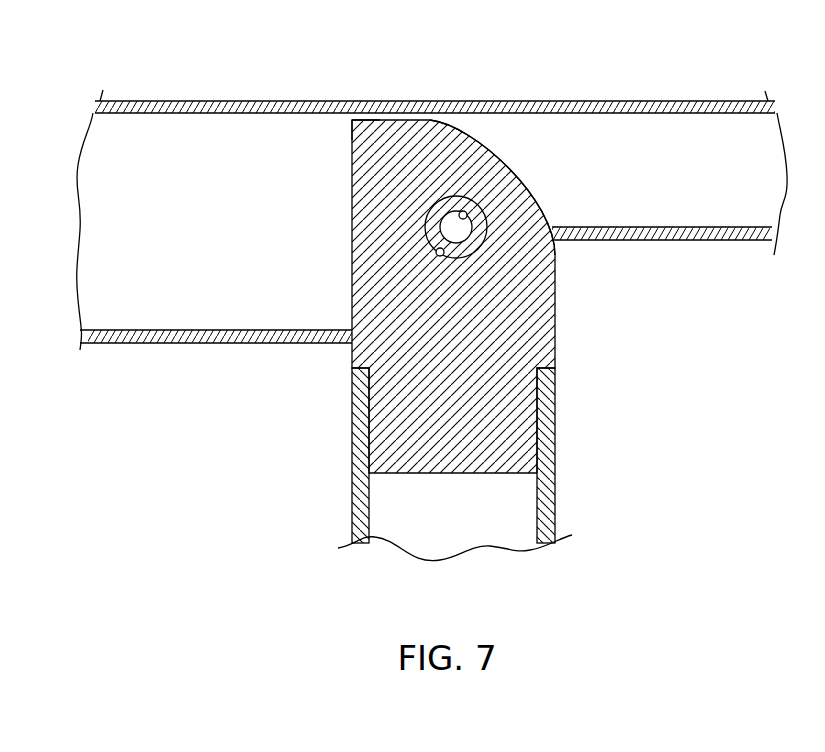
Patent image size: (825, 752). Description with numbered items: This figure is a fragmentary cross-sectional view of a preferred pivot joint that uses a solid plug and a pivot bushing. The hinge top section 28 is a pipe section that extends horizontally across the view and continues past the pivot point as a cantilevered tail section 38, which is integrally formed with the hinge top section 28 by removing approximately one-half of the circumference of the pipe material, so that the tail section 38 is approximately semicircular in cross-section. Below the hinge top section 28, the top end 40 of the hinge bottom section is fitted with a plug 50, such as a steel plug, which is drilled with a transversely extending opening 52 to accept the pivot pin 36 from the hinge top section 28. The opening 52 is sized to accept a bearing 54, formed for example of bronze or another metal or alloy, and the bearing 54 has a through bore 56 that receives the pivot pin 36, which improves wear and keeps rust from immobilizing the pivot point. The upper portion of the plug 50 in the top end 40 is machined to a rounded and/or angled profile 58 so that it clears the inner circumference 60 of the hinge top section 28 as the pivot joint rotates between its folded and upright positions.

The hinge top section 28 is at (112, 95).
The cantilevered tail section 38 is at (748, 100).
The top end 40 is at (609, 358).
The plug 50 is at (556, 291).
The transversely extending opening 52 is at (437, 255).
The bearing 54 is at (460, 212).
The through bore 56 is at (474, 200).
The rounded and/or angled profile 58 is at (503, 158).
The inner circumference 60 is at (350, 120).
The pivot pin 36 is at (452, 232).